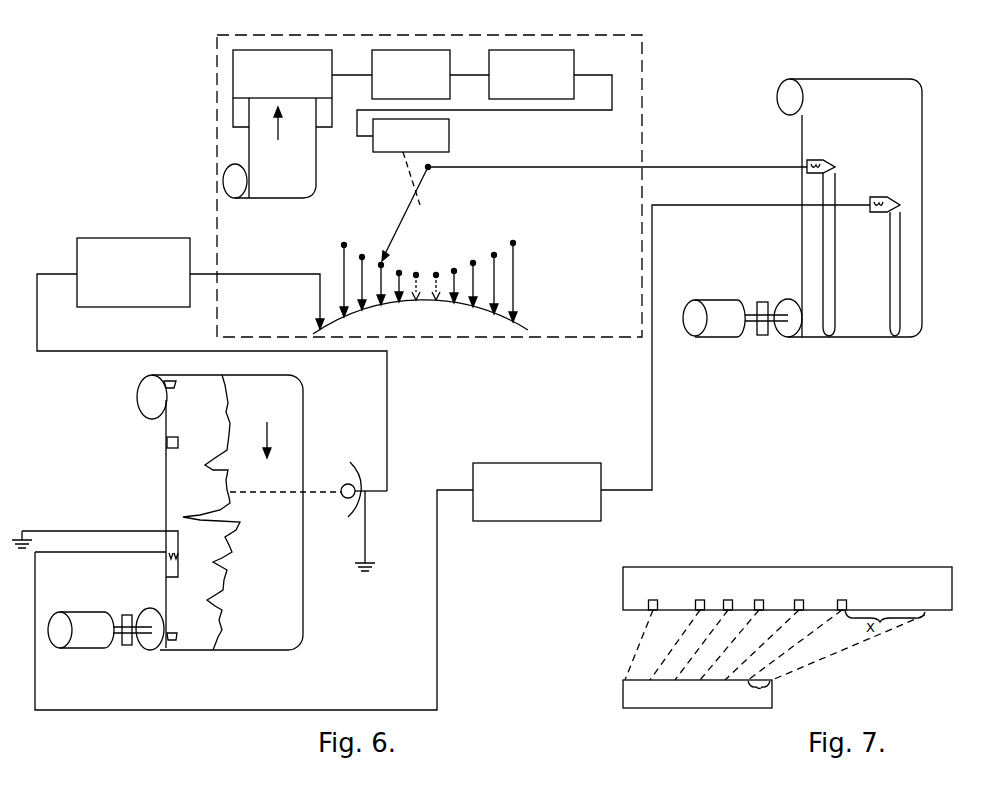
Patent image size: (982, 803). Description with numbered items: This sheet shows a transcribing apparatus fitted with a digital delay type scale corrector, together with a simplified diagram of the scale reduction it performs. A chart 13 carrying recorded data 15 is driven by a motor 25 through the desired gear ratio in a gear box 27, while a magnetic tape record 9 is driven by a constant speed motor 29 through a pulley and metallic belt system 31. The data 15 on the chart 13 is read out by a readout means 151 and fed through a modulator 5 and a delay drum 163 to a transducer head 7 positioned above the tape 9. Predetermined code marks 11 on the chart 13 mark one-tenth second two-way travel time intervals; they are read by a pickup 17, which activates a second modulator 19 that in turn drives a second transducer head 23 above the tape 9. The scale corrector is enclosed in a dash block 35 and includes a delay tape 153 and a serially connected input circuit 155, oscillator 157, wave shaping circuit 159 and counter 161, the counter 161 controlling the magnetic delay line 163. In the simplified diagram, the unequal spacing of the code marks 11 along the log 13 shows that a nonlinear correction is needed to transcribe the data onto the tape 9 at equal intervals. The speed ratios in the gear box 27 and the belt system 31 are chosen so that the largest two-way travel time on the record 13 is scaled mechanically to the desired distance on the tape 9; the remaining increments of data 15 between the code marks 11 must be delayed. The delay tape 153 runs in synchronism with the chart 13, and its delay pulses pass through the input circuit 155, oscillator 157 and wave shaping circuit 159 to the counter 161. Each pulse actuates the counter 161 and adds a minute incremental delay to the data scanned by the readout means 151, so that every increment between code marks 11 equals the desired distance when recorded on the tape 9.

In FIG. 6, the modulator 5 is at (125, 237).
In FIG. 6, the transducer head 7 is at (820, 158).
In FIG. 6, the record 9 is at (922, 128).
In FIG. 7, the record 9 is at (772, 700).
In FIG. 6, the code marks 11 is at (178, 443).
In FIG. 7, the code marks 11 is at (656, 599).
In FIG. 6, the chart 13 is at (303, 420).
In FIG. 7, the chart 13 is at (930, 567).
In FIG. 6, the data 15 is at (233, 556).
In FIG. 6, the pickup 17 is at (179, 558).
In FIG. 6, the modulator 19 is at (535, 462).
In FIG. 6, the transducer head 23 is at (885, 196).
In FIG. 6, the motor 25 is at (82, 649).
In FIG. 6, the gear box 27 is at (128, 646).
In FIG. 6, the constant speed motor 29 is at (708, 338).
In FIG. 6, the pulley and metallic belt system 31 is at (765, 336).
In FIG. 6, the scale corrector 35 is at (642, 86).
In FIG. 6, the readout means 151 is at (352, 468).
In FIG. 6, the delay tape 153 is at (316, 155).
In FIG. 6, the input circuit 155 is at (333, 64).
In FIG. 6, the oscillator 157 is at (451, 64).
In FIG. 6, the wave shaping circuit 159 is at (575, 63).
In FIG. 6, the counter 161 is at (449, 148).
In FIG. 6, the magnetic delay line 163 is at (526, 330).